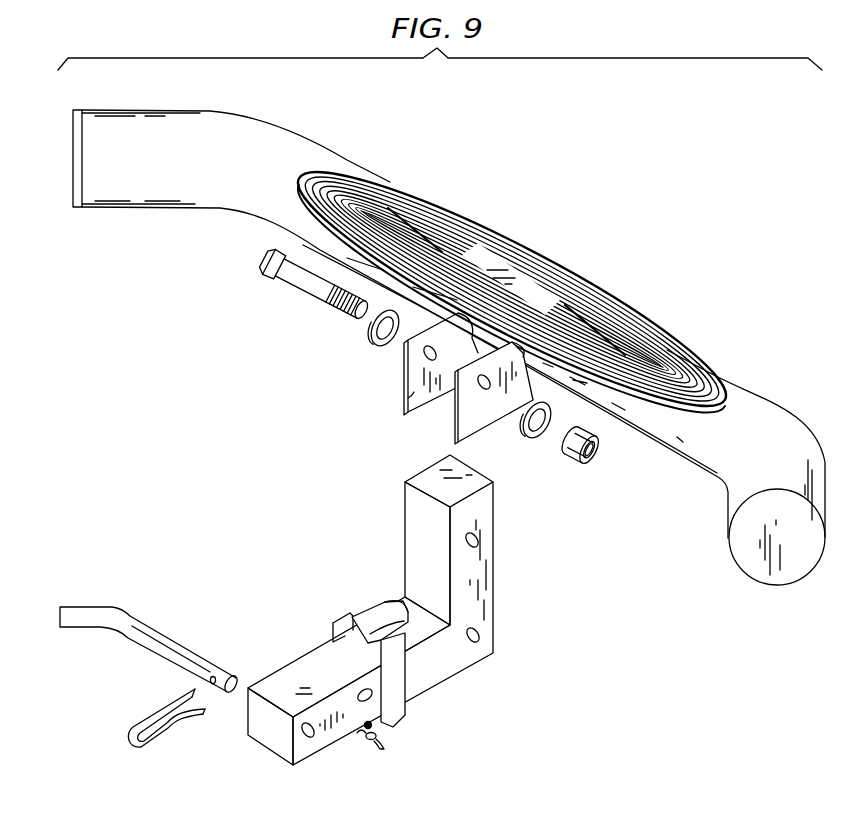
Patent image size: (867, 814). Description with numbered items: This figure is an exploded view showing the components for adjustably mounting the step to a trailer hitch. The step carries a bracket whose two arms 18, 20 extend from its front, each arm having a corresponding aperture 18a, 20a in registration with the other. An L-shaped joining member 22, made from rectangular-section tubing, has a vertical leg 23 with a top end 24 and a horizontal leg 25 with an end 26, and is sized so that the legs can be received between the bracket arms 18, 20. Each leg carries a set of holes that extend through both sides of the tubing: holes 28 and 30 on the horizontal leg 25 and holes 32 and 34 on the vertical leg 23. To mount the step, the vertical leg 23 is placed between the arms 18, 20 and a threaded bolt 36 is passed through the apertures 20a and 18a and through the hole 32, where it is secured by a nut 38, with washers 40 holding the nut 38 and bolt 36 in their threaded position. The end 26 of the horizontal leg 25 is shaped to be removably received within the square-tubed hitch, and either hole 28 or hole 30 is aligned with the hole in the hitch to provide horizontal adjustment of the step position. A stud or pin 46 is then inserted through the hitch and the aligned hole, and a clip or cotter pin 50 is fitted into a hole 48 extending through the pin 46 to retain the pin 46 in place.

The bracket arm 18 is at (497, 413).
The aperture 18a is at (487, 388).
The bracket arm 20 is at (412, 371).
The aperture 20a is at (425, 357).
The L-shaped joining member 22 is at (378, 617).
The vertical leg 23 is at (491, 593).
The top end 24 is at (422, 479).
The horizontal leg 25 is at (445, 660).
The end 26 is at (258, 734).
The hole 28 is at (373, 697).
The hole 30 is at (315, 734).
The hole 32 is at (478, 542).
The hole 34 is at (480, 636).
The threaded bolt 36 is at (303, 288).
The nut 38 is at (567, 451).
The washer 40 is at (375, 341).
The pin 46 is at (148, 639).
The hole 48 is at (213, 677).
The cotter pin 50 is at (137, 723).